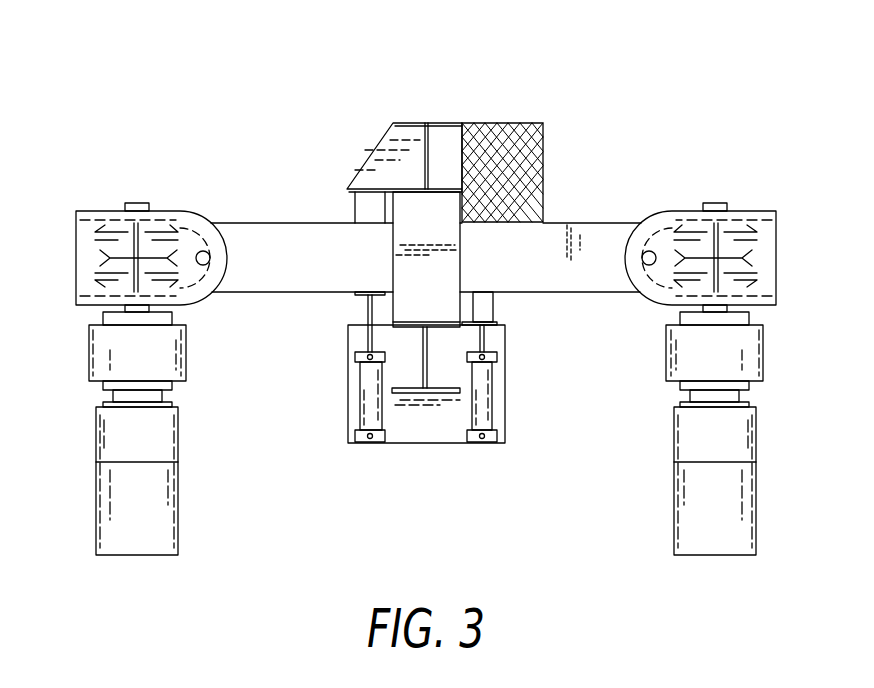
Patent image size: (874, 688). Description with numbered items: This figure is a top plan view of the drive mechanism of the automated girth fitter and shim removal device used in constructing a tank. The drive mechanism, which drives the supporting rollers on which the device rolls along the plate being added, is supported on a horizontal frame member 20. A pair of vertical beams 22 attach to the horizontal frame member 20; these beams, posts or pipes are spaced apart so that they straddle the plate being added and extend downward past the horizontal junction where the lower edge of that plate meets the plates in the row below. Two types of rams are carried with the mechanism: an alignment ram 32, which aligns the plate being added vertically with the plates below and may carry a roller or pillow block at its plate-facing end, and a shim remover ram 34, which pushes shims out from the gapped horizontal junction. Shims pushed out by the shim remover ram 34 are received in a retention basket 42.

The horizontal frame member 20 is at (282, 245).
The vertical beams 22 is at (443, 123).
The alignment ram 32 is at (367, 382).
The shim remover ram 34 is at (485, 382).
The retention basket 42 is at (545, 163).